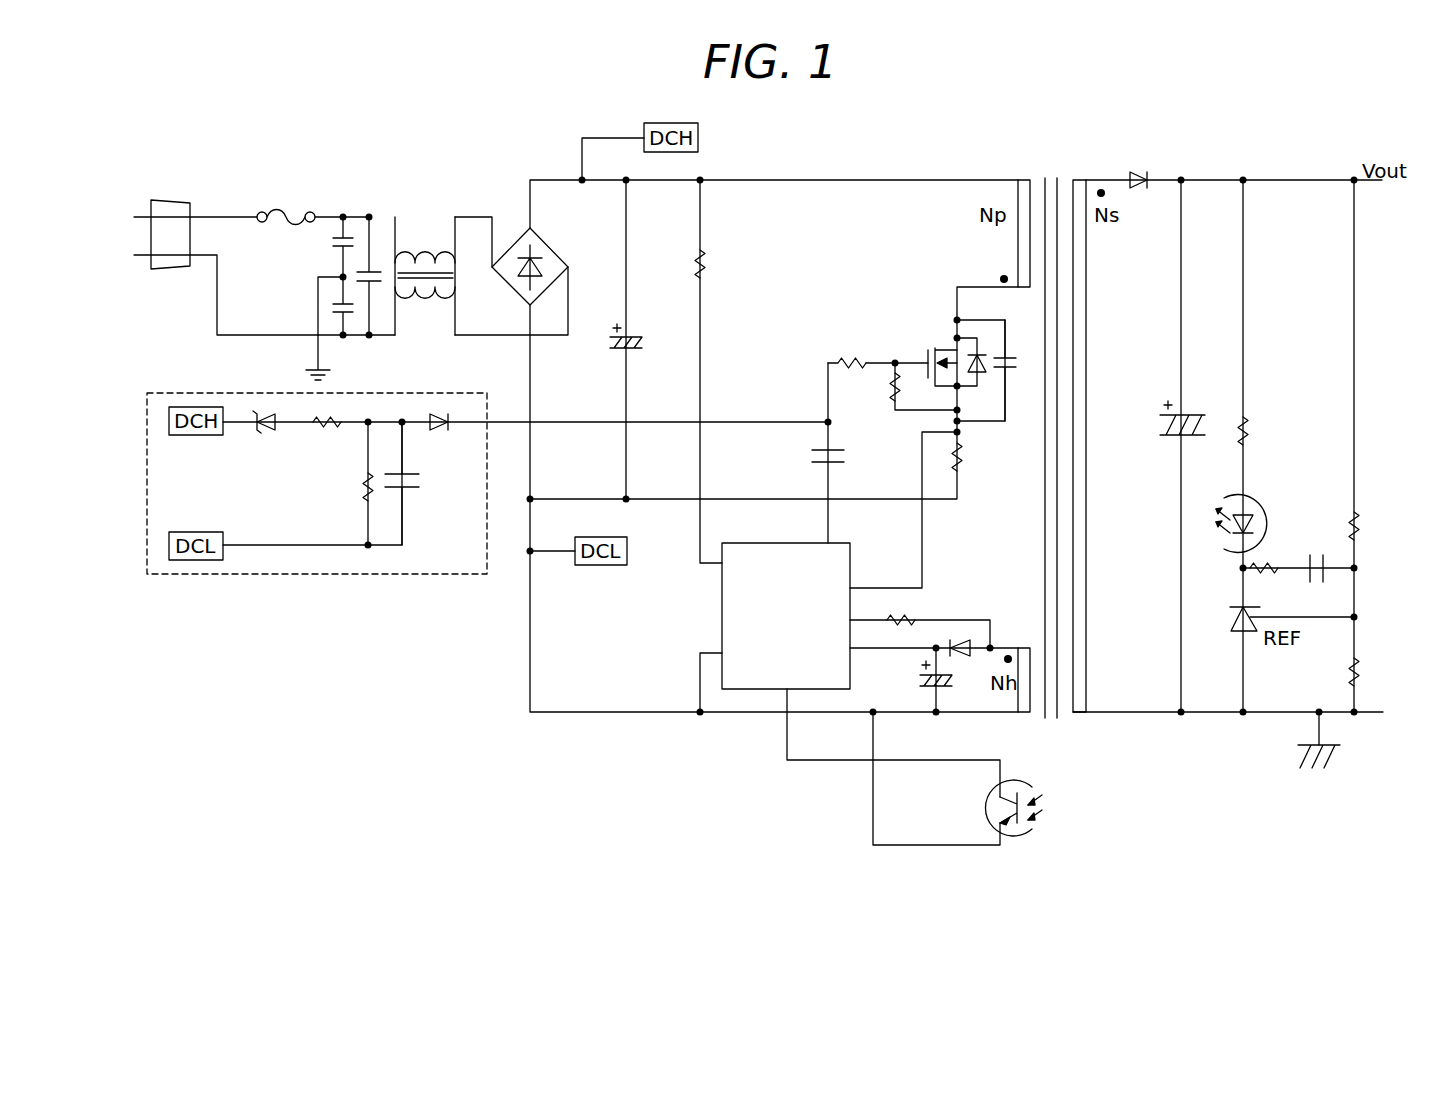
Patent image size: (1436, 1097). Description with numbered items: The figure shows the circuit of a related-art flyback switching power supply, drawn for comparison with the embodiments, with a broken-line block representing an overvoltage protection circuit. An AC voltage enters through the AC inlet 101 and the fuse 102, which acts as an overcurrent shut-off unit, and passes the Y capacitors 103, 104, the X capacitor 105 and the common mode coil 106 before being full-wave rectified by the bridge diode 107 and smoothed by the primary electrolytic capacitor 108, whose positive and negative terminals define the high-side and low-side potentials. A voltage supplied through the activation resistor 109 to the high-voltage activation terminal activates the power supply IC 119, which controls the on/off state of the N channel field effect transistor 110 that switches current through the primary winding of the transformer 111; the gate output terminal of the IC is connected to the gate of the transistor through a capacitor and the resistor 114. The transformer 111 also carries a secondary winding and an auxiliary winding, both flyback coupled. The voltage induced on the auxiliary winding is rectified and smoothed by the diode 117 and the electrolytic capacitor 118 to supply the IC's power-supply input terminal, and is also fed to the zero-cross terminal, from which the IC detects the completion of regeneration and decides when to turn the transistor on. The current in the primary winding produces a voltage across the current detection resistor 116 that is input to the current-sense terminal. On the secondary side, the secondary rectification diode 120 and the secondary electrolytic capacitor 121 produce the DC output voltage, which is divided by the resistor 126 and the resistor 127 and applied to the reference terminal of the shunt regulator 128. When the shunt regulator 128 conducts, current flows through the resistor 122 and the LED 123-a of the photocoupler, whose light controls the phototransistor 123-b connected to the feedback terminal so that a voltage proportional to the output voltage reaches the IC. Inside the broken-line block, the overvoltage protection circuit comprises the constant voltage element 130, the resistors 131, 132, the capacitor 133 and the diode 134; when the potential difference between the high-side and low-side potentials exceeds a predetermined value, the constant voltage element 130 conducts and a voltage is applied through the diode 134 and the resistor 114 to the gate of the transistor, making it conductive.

The AC inlet 101 is at (177, 200).
The fuse 102 is at (286, 208).
The capacitor 103 is at (330, 242).
The capacitor 104 is at (330, 309).
The capacitor 105 is at (386, 270).
The common mode coil 106 is at (425, 240).
The bridge diode 107 is at (547, 250).
The primary electrolytic capacitor 108 is at (607, 345).
The activation resistor 109 is at (708, 266).
The N channel field effect transistor 110 is at (940, 348).
The transformer 111 is at (1051, 178).
The resistor 114 is at (849, 357).
The current detection resistor 116 is at (965, 457).
The diode 117 is at (957, 640).
The electrolytic capacitor 118 is at (916, 681).
The power supply IC 119 is at (722, 612).
The secondary rectification diode 120 is at (1142, 171).
The secondary electrolytic capacitor 121 is at (1160, 427).
The resistor 122 is at (1252, 433).
The LED of photocoupler 123-a is at (1276, 493).
The phototransistor of photocoupler 123-b is at (1048, 768).
The resistor 126 is at (1362, 527).
The resistor 127 is at (1362, 672).
The shunt regulator 128 is at (1235, 633).
The constant voltage element 130 is at (266, 432).
The resistor 131 is at (327, 432).
The resistor 132 is at (362, 495).
The capacitor 133 is at (420, 482).
The diode 134 is at (442, 432).